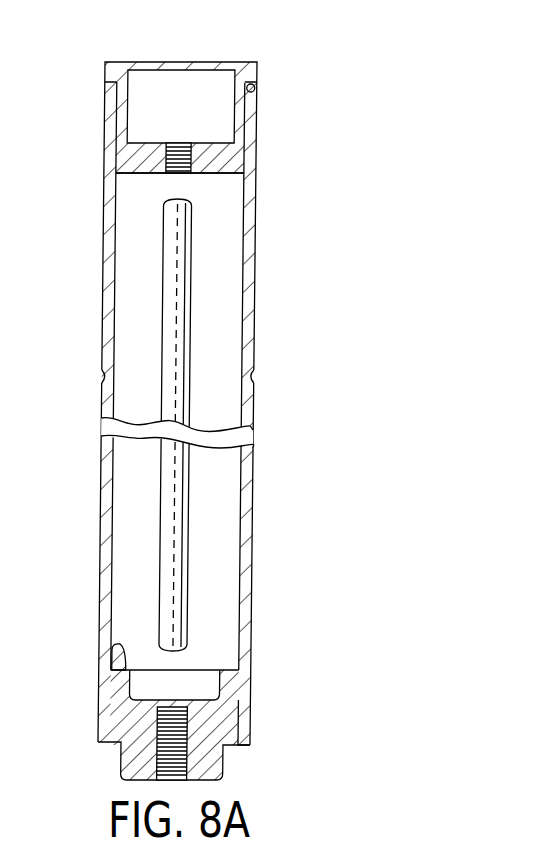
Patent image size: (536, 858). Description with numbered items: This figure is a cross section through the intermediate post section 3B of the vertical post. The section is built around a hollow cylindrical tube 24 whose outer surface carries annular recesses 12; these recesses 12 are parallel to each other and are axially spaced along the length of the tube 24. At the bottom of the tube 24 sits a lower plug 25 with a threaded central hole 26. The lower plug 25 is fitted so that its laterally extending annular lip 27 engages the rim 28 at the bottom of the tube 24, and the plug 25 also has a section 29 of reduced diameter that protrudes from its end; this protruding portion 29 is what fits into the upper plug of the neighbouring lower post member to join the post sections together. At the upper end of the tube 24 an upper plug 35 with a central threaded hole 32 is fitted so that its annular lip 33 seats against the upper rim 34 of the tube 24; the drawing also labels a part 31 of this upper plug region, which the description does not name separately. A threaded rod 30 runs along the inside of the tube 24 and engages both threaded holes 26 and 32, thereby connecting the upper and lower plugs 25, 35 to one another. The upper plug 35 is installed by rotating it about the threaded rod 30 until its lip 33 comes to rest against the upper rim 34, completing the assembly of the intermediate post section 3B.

The annular recess 12 is at (104, 378).
The hollow cylindrical tube 24 is at (251, 320).
The lower plug 25 is at (107, 647).
The threaded central hole 26 is at (206, 752).
The annular lip 27 is at (240, 738).
The rim 28 is at (104, 722).
The section of reduced diameter 29 is at (120, 767).
The threaded rod 30 is at (170, 281).
The partition 31 is at (228, 182).
The central threaded hole 32 is at (187, 146).
The annular lip 33 is at (243, 68).
The upper rim 34 is at (255, 86).
The upper plug 35 is at (130, 90).
The intermediate post section 3B is at (265, 493).